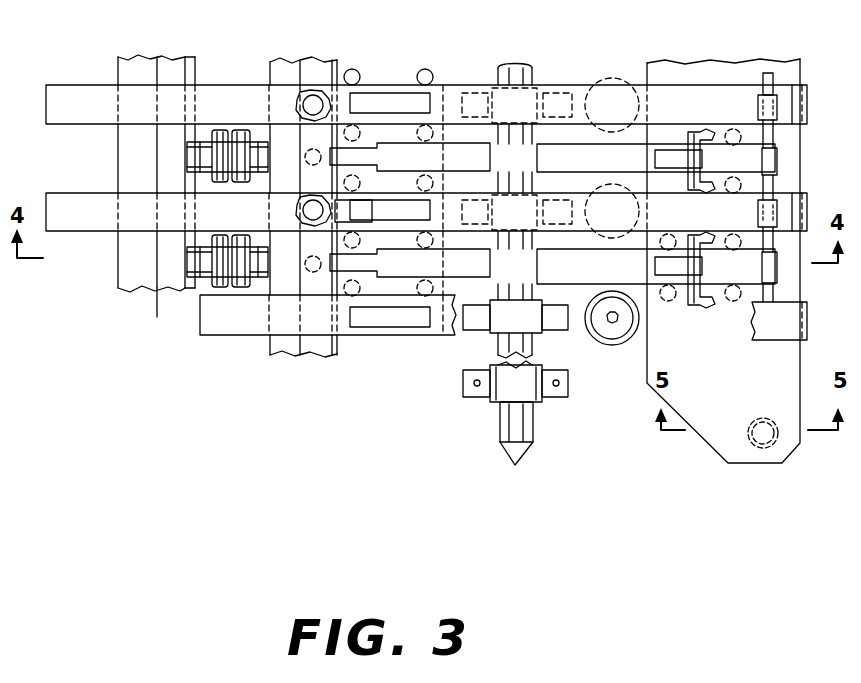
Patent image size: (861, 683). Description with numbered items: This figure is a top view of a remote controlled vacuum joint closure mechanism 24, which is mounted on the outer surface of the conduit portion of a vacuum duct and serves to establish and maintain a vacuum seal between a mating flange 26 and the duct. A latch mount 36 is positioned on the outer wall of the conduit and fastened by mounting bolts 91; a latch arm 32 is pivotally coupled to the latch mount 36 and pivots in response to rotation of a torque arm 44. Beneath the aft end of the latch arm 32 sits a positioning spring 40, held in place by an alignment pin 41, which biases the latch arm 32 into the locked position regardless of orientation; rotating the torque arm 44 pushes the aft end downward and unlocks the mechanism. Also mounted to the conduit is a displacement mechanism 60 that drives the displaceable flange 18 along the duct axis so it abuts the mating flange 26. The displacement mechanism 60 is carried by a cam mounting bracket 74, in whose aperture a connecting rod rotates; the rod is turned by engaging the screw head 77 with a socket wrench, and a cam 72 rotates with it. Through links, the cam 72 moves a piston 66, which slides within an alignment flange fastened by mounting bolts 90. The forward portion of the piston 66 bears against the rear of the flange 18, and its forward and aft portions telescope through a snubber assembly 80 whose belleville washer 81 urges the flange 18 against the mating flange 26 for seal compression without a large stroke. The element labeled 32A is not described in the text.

The displaceable flange 18 is at (172, 65).
The remote controlled vacuum joint closure mechanism 24 is at (656, 54).
The mating flange 26 is at (130, 300).
The latch arm 32 is at (578, 88).
The upper guide rail 32A is at (65, 90).
The latch mount 36 is at (386, 322).
The positioning spring 40 is at (604, 341).
The alignment pin 41 is at (615, 322).
The torque arm 44 is at (703, 305).
The displacement mechanism 60 is at (262, 155).
The piston 66 is at (198, 262).
The cam 72 is at (543, 398).
The cam mounting bracket 74 is at (467, 380).
The screw head 77 is at (504, 428).
The snubber assembly 80 is at (228, 128).
The belleville washer 81 is at (232, 290).
The mounting bolts 90 is at (312, 93).
The mounting bolts 91 is at (424, 69).